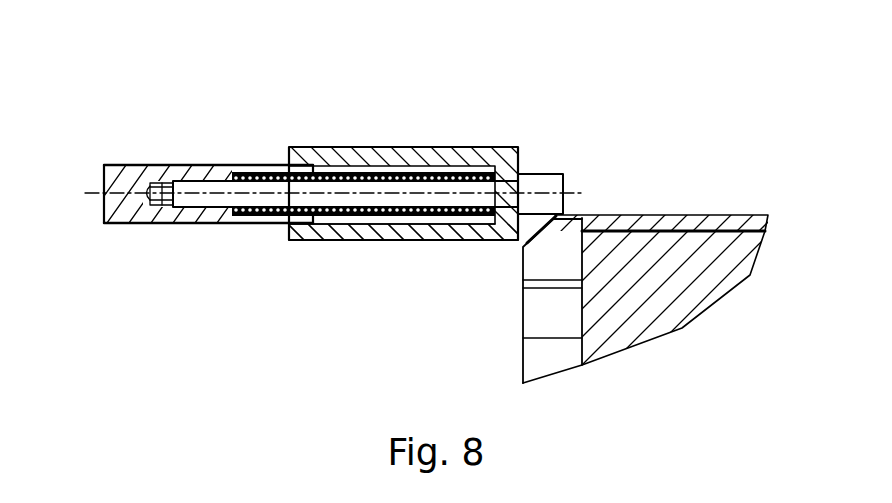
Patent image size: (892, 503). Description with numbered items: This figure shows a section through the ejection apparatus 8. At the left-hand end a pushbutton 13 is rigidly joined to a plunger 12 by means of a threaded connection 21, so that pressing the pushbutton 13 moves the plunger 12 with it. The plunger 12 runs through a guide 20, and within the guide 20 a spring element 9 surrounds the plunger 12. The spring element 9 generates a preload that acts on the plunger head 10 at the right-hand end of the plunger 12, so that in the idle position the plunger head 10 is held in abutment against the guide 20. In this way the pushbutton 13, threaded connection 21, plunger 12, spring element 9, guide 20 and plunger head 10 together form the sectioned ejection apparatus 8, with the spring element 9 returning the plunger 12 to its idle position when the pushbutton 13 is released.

The ejection apparatus 8 is at (363, 118).
The spring element 9 is at (290, 228).
The plunger head 10 is at (538, 182).
The plunger 12 is at (402, 190).
The pushbutton 13 is at (133, 165).
The guide 20 is at (433, 225).
The threaded connection 21 is at (190, 176).